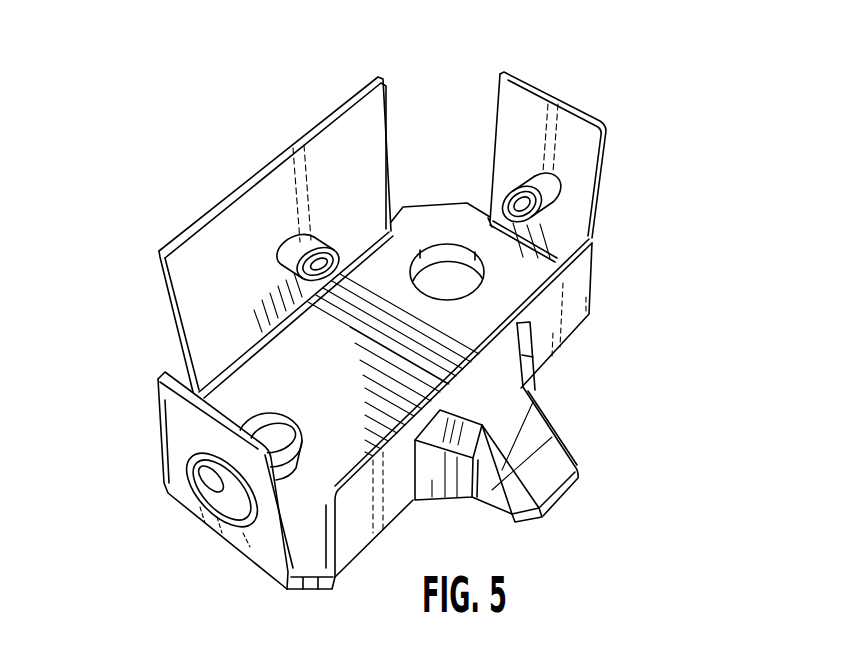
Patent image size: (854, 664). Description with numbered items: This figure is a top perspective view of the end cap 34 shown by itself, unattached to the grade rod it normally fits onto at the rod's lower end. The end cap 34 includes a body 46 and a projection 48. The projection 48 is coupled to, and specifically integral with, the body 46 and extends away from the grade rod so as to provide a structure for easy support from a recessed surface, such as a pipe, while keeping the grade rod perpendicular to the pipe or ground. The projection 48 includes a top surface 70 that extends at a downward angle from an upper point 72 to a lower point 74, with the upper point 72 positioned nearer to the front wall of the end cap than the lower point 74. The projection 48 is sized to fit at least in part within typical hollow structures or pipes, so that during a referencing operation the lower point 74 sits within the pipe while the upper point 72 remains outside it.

The end cap 34 is at (641, 77).
The body 46 is at (131, 433).
The projection 48 is at (576, 415).
The upper point 72 is at (480, 365).
The lower point 74 is at (573, 480).
The top surface 70 is at (543, 473).